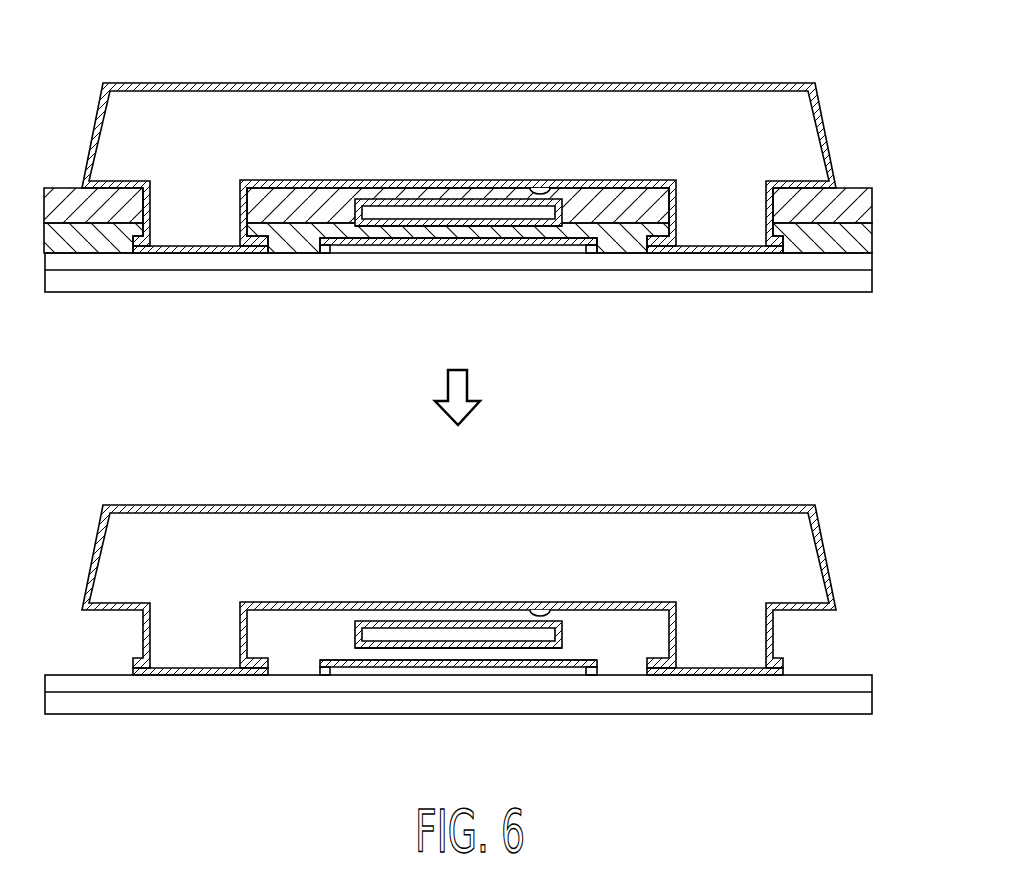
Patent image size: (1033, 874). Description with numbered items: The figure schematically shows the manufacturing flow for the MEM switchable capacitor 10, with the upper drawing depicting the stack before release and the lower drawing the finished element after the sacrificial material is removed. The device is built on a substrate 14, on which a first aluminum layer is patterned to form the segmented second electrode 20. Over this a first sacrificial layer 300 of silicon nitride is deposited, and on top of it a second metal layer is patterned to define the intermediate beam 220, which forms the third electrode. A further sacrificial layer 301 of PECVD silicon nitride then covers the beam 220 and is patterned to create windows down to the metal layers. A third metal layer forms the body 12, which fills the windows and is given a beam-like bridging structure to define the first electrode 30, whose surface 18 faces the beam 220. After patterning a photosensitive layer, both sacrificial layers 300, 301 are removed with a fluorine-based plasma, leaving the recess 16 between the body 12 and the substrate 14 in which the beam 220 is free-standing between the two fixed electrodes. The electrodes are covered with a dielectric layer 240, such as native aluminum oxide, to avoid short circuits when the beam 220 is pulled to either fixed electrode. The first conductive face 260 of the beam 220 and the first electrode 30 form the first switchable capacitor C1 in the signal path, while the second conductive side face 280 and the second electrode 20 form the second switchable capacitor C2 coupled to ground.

The MEM switchable capacitor 10 is at (667, 293).
The body 12 is at (777, 103).
The substrate 14 is at (836, 283).
The recess 16 is at (284, 247).
The surface of the first electrode 18 is at (545, 187).
The second electrode 20 is at (370, 246).
The first electrode 30 is at (500, 108).
The intermediate beam 220 is at (413, 212).
The dielectric layer 240 is at (556, 239).
The first conductive face 260 is at (452, 199).
The second conductive side face 280 is at (481, 227).
The first sacrificial layer 300 is at (858, 236).
The further sacrificial layer 301 is at (652, 200).
The first switchable capacitor C1 is at (440, 658).
The second switchable capacitor C2 is at (441, 624).